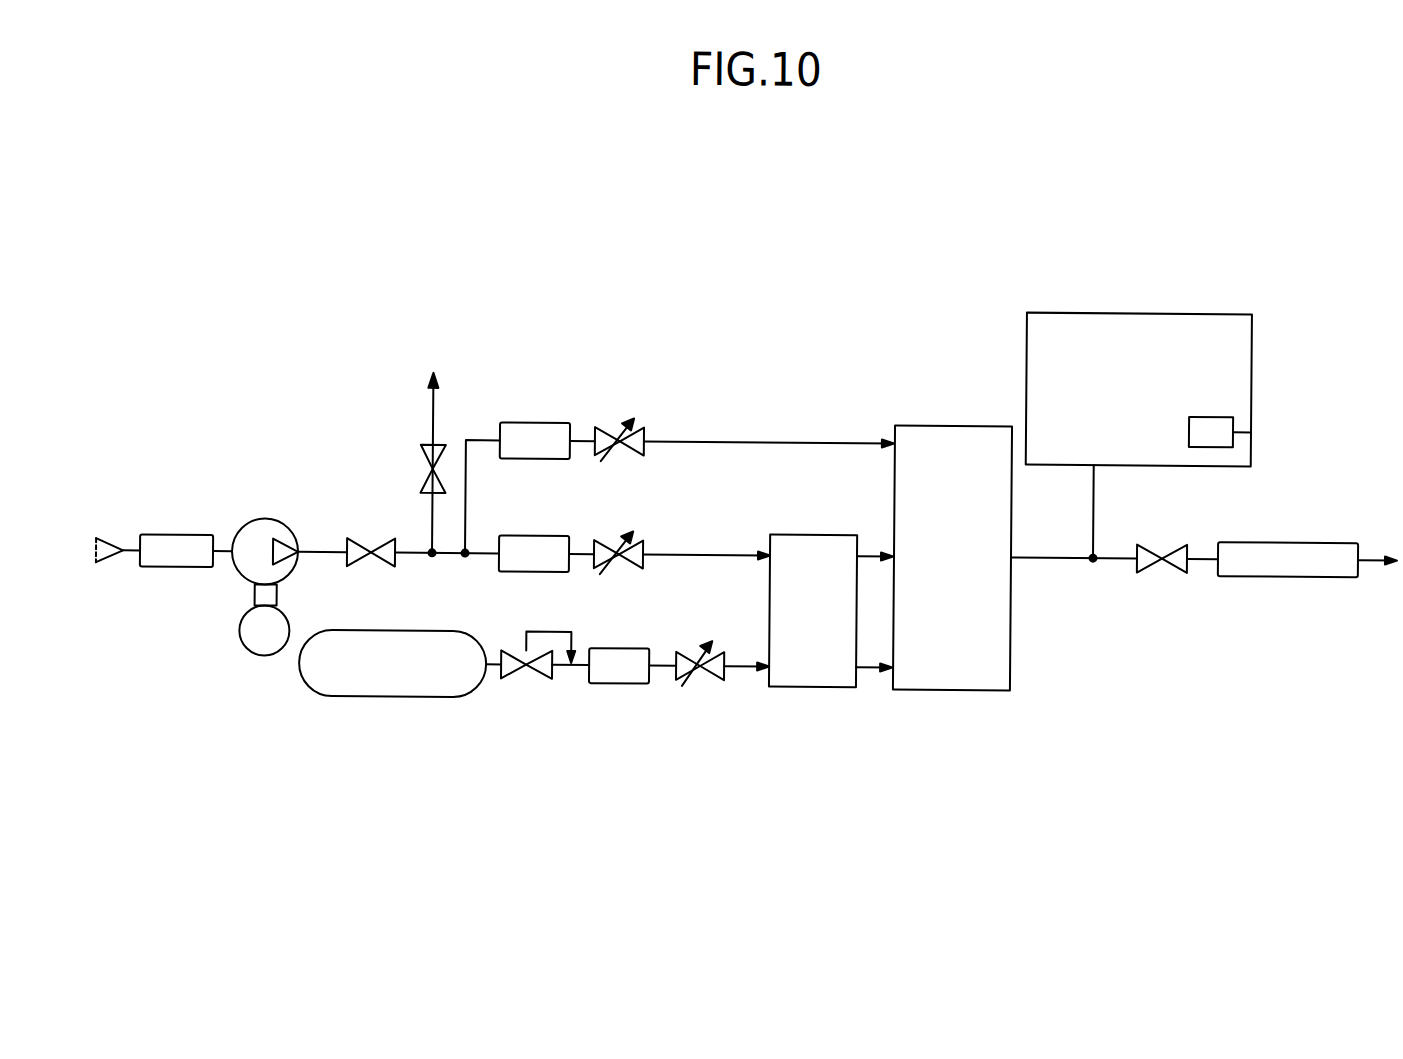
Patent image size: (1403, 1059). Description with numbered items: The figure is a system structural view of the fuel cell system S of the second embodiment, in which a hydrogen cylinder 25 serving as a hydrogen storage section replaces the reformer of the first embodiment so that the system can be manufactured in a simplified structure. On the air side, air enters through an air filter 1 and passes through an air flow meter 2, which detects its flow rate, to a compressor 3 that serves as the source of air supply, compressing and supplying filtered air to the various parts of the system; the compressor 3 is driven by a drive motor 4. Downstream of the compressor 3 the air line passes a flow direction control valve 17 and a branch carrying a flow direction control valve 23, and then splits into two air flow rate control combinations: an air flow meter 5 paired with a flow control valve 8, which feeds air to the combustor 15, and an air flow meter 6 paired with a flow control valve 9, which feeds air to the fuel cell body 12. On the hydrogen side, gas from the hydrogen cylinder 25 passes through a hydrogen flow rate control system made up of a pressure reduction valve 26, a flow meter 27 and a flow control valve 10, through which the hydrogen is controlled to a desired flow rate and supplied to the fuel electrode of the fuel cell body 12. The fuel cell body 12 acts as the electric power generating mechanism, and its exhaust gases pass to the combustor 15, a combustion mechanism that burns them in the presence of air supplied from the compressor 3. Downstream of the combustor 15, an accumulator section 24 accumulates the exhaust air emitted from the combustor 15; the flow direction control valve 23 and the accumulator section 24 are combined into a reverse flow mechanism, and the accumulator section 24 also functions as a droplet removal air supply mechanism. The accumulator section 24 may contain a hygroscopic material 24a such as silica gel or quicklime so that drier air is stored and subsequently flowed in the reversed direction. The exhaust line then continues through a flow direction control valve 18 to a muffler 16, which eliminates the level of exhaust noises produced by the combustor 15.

The fuel cell system S is at (740, 305).
The air filter 1 is at (111, 540).
The air flow meter 2 is at (195, 539).
The compressor 3 is at (265, 522).
The drive motor 4 is at (267, 659).
The flow direction control valve 17 is at (368, 541).
The flow direction control valve 23 is at (440, 446).
The air flow meter 5 is at (554, 424).
The air flow meter 6 is at (554, 537).
The flow control valve 8 is at (603, 428).
The flow control valve 9 is at (603, 541).
The fuel cell body 12 is at (813, 534).
The combustor 15 is at (951, 424).
The accumulator section 24 is at (1203, 462).
The hygroscopic material 24a is at (1250, 428).
The flow direction control valve 18 is at (1172, 569).
The muffler 16 is at (1293, 572).
The hydrogen cylinder 25 is at (407, 699).
The pressure reduction valve 26 is at (510, 652).
The flow meter 27 is at (620, 649).
The flow control valve 10 is at (690, 652).